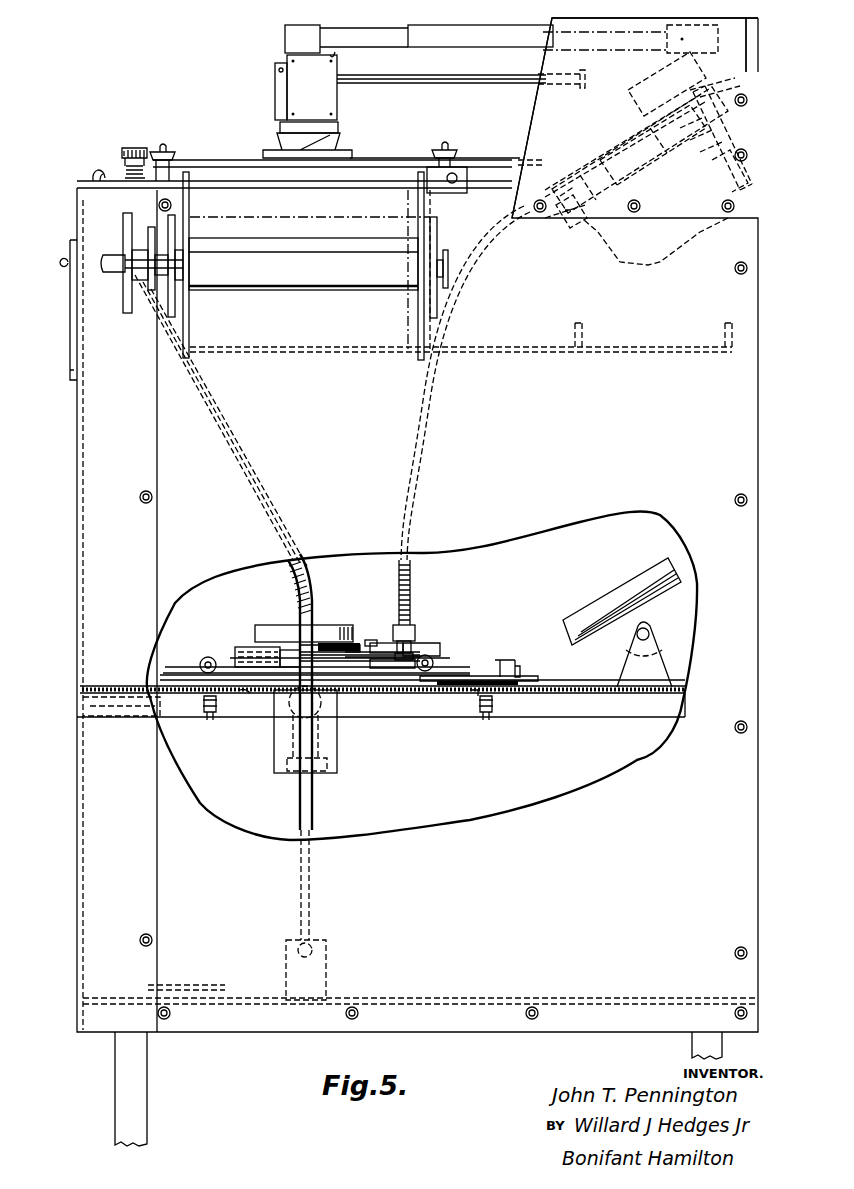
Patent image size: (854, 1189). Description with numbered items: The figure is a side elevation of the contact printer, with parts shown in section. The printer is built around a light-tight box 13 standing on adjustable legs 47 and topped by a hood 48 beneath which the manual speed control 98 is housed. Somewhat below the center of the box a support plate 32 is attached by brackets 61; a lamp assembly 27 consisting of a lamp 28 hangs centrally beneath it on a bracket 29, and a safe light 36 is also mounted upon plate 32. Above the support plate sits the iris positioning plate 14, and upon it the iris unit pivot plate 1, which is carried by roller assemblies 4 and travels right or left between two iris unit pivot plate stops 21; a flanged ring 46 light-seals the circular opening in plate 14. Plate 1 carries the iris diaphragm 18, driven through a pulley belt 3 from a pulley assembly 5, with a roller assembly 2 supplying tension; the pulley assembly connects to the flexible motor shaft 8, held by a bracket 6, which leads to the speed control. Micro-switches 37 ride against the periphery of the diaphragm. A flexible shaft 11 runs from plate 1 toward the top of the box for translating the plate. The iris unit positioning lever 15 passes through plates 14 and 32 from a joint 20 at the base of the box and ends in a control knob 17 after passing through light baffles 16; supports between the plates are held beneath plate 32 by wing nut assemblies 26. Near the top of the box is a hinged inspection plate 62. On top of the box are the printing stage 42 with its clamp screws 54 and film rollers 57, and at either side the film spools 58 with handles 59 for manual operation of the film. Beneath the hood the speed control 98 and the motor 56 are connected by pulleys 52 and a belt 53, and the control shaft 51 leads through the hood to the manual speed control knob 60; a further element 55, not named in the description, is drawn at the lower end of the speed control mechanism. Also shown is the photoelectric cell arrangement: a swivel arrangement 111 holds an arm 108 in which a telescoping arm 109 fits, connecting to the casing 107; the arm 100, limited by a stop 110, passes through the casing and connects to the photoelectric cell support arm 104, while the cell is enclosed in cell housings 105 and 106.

The iris unit pivot plate 1 is at (396, 680).
The roller assembly 2 is at (357, 643).
The pulley belt 3 is at (375, 650).
The roller assemblies 4 is at (210, 656).
The pulley assembly 5 is at (425, 652).
The bracket 6 is at (412, 645).
The flexible motor shaft 8 is at (480, 282).
The flexible shaft 11 is at (200, 410).
The light-tight box 13 is at (70, 520).
The iris positioning plate 14 is at (166, 676).
The iris unit positioning lever 15 is at (204, 388).
The light baffles 16 is at (92, 176).
The control knob 17 is at (118, 146).
The iris diaphragm 18 is at (320, 625).
The joint 20 is at (338, 962).
The iris unit pivot plate stops 21 is at (512, 660).
The wing nut assembly 26 is at (206, 714).
The lamp assembly 27 is at (284, 755).
The lamp 28 is at (290, 720).
The bracket 29 is at (337, 731).
The support plate 32 is at (560, 694).
The safe light 36 is at (583, 612).
The micro-switches 37 is at (246, 646).
The printing stage 42 is at (402, 151).
The flanged ring 46 is at (290, 675).
The adjustable legs 47 is at (140, 1072).
The hood 48 is at (738, 34).
The control shaft 51 is at (635, 112).
The pulleys 52 is at (700, 114).
The belt 53 is at (722, 146).
The clamp screws 54 is at (163, 144).
The bracket 55 is at (590, 229).
The motor 56 is at (678, 252).
The film rollers 57 is at (214, 160).
The film spools 58 is at (270, 288).
The handles 59 is at (114, 275).
The manual speed control knob 60 is at (658, 90).
The brackets 61 is at (108, 706).
The hinged inspection plate 62 is at (72, 285).
The manual speed control 98 is at (604, 167).
The arm 100 is at (526, 76).
The photoelectric cell support arm 104 is at (275, 96).
The cell housing 105 is at (278, 139).
The cell housing 106 is at (338, 136).
The casing 107 is at (348, 104).
The arm 108 is at (462, 47).
The telescoping arm 109 is at (395, 38).
The stop 110 is at (590, 78).
The swivel arrangement 111 is at (665, 42).